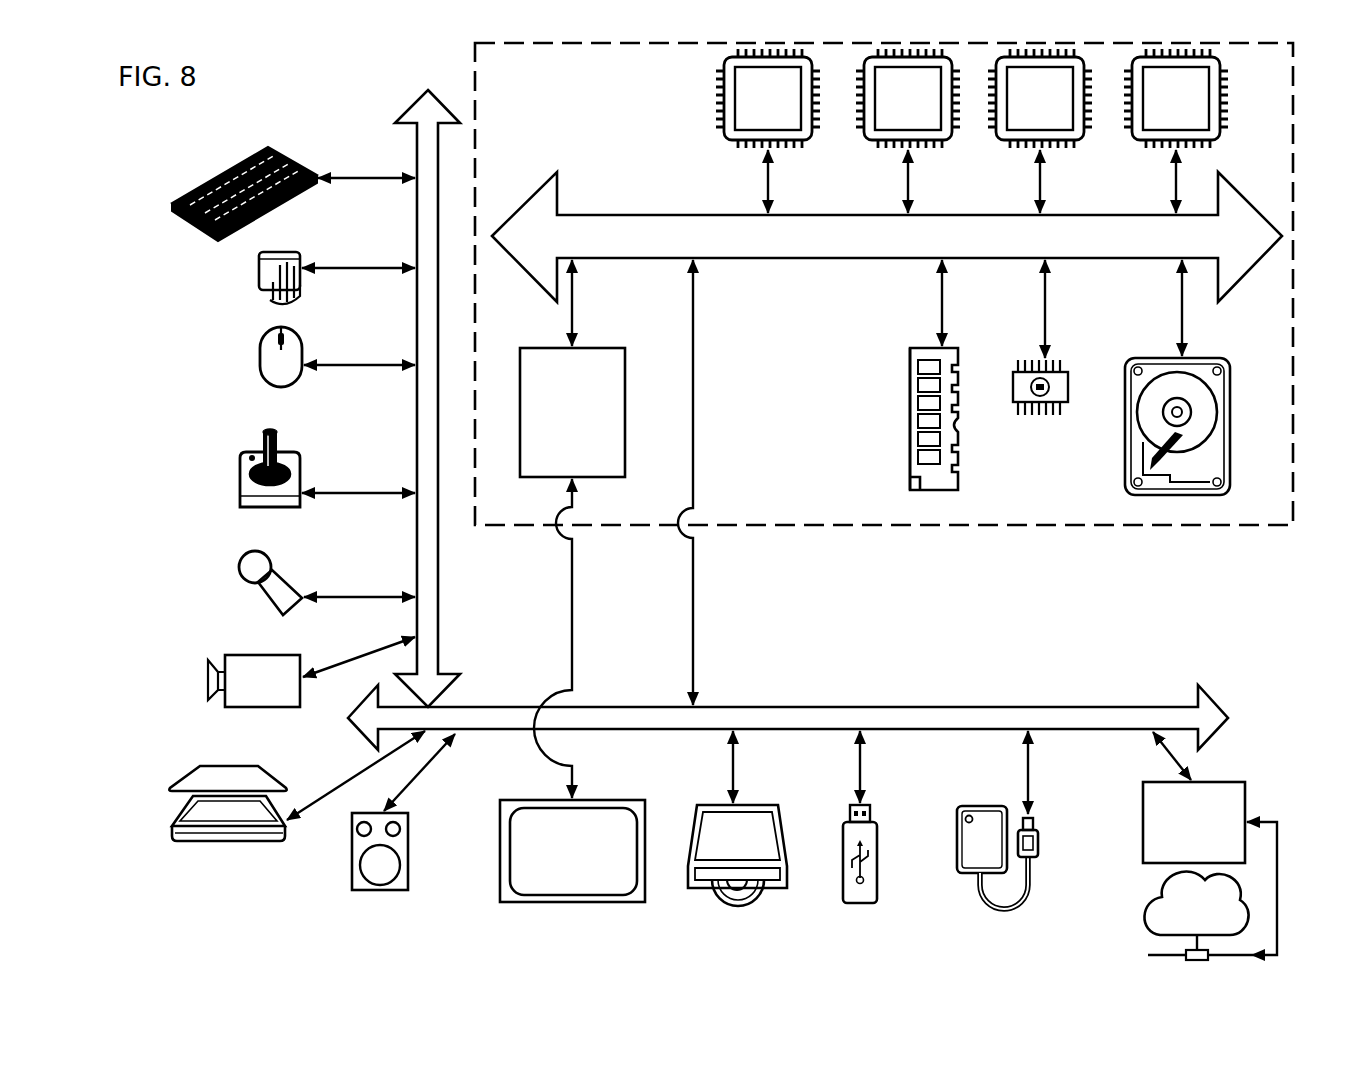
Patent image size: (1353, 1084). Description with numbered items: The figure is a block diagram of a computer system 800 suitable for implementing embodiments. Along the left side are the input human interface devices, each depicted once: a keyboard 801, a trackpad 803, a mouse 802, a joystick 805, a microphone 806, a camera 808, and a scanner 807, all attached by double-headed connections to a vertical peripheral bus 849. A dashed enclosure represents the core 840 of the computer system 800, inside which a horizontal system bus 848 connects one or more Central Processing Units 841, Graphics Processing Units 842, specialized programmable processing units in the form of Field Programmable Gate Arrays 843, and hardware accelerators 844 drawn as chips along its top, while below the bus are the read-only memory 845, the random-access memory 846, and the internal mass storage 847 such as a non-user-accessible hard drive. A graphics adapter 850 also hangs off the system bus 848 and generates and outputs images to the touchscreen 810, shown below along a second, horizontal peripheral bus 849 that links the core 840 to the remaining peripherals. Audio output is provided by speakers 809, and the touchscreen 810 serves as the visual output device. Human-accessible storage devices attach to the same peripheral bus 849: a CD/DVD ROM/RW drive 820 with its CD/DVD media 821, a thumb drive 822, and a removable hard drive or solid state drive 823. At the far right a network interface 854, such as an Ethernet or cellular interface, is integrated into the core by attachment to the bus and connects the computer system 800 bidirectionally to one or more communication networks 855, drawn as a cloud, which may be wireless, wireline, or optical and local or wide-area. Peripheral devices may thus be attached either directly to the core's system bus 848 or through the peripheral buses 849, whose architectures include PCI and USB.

The computer system 800 is at (215, 122).
The keyboard 801 is at (172, 206).
The mouse 802 is at (258, 356).
The trackpad 803 is at (255, 274).
The joystick 805 is at (240, 490).
The microphone 806 is at (238, 570).
The scanner 807 is at (173, 826).
The camera 808 is at (210, 682).
The speakers 809 is at (386, 893).
The touchscreen 810 is at (570, 905).
The CD/DVD ROM/RW drive 820 is at (759, 842).
The CD/DVD media 821 is at (718, 892).
The thumb drive 822 is at (865, 905).
The removable hard drive or solid state drive 823 is at (958, 877).
The core 840 is at (878, 525).
The Central Processing Unit 841 is at (768, 131).
The Graphics Processing Unit 842 is at (908, 131).
The Field Programmable Gate Array 843 is at (1040, 131).
The hardware accelerator 844 is at (1176, 131).
The read-only memory 845 is at (1036, 416).
The random-access memory 846 is at (908, 418).
The internal mass storage 847 is at (1140, 356).
The system bus 848 is at (887, 237).
The peripheral bus 849 is at (417, 126).
The graphics adapter 850 is at (572, 368).
The network interface 854 is at (1210, 843).
The communication network 855 is at (1150, 920).